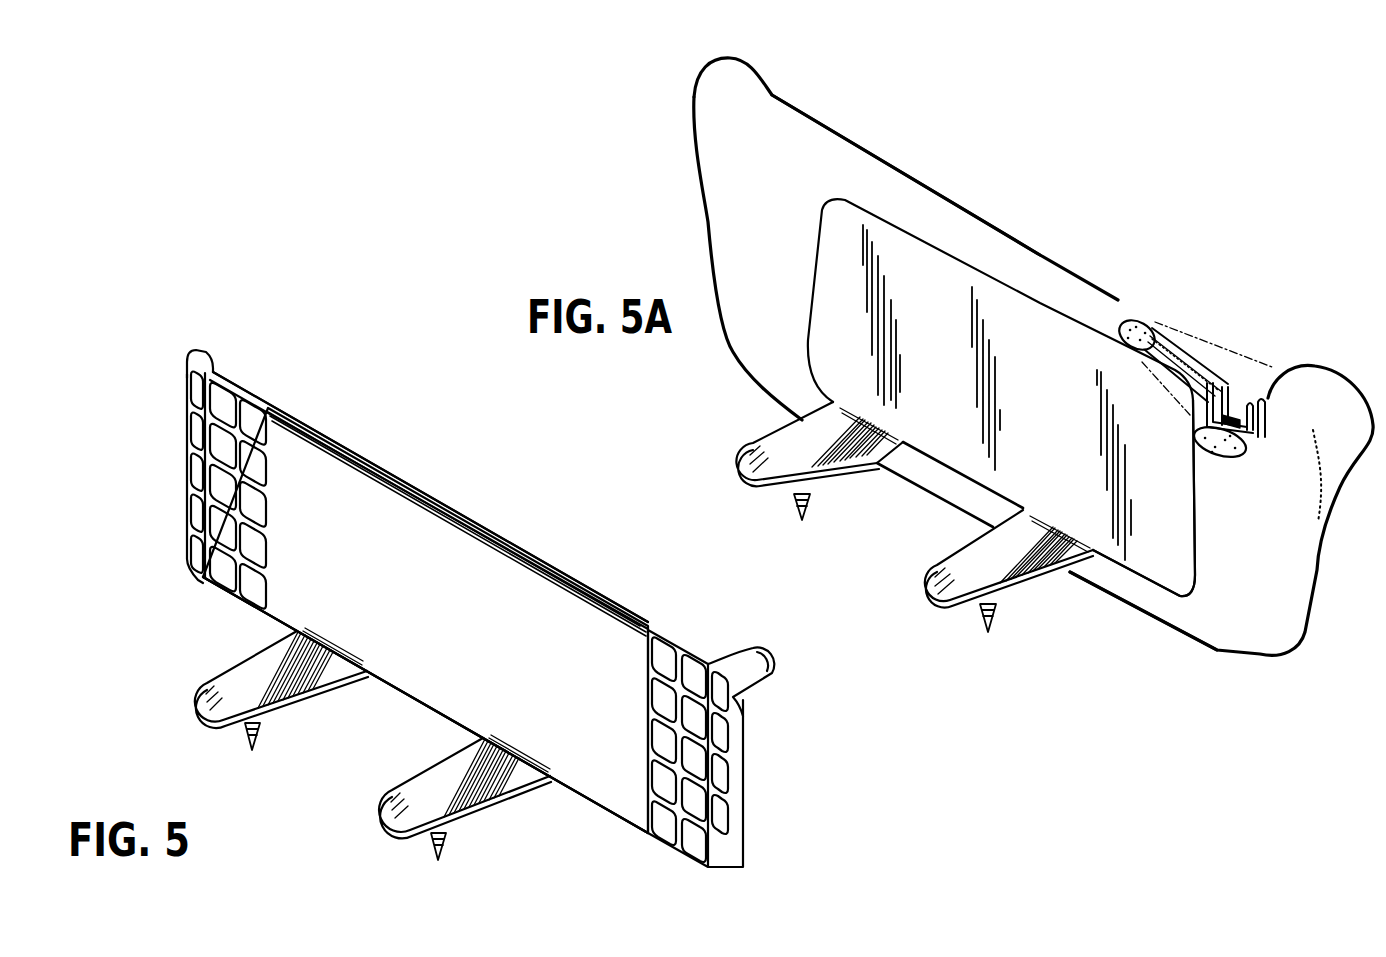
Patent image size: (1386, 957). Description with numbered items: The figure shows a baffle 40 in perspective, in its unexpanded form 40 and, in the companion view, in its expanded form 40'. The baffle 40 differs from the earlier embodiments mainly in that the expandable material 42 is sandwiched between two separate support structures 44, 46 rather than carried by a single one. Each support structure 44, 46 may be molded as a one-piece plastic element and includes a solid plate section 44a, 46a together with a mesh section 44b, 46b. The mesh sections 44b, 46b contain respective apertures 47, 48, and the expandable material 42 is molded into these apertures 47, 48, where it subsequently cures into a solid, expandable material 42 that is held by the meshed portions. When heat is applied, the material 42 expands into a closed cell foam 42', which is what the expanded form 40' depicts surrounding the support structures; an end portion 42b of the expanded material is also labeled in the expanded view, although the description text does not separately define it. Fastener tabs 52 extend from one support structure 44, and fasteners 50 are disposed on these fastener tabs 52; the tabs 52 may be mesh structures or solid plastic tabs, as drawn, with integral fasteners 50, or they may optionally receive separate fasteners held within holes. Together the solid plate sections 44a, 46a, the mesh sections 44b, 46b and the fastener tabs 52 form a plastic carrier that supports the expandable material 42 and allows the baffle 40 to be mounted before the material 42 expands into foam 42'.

In FIG. 5, the baffle 40 is at (351, 602).
In FIG. 5A, the expanded form of the baffle 40' is at (907, 372).
In FIG. 5, the expandable material 42 is at (515, 538).
In FIG. 5A, the closed cell foam 42' is at (1033, 356).
In FIG. 5A, the frame end portion 42b is at (1215, 455).
In FIG. 5, the support structure 44 is at (455, 701).
In FIG. 5A, the support structure 44 is at (1148, 573).
In FIG. 5, the solid plate section 44a is at (425, 620).
In FIG. 5A, the solid plate section 44a is at (1001, 397).
In FIG. 5, the mesh section 44b is at (204, 560).
In FIG. 5, the support structure 46 is at (499, 527).
In FIG. 5A, the support structure 46 is at (1193, 354).
In FIG. 5, the solid plate section 46a is at (457, 512).
In FIG. 5A, the solid plate section 46a is at (1160, 340).
In FIG. 5A, the mesh section 46b is at (1261, 398).
In FIG. 5, the apertures 47 is at (228, 520).
In FIG. 5A, the apertures 48 is at (1237, 393).
In FIG. 5, the fasteners 50 is at (247, 737).
In FIG. 5A, the fasteners 50 is at (794, 499).
In FIG. 5, the fastener tabs 52 is at (338, 680).
In FIG. 5A, the fastener tabs 52 is at (856, 464).